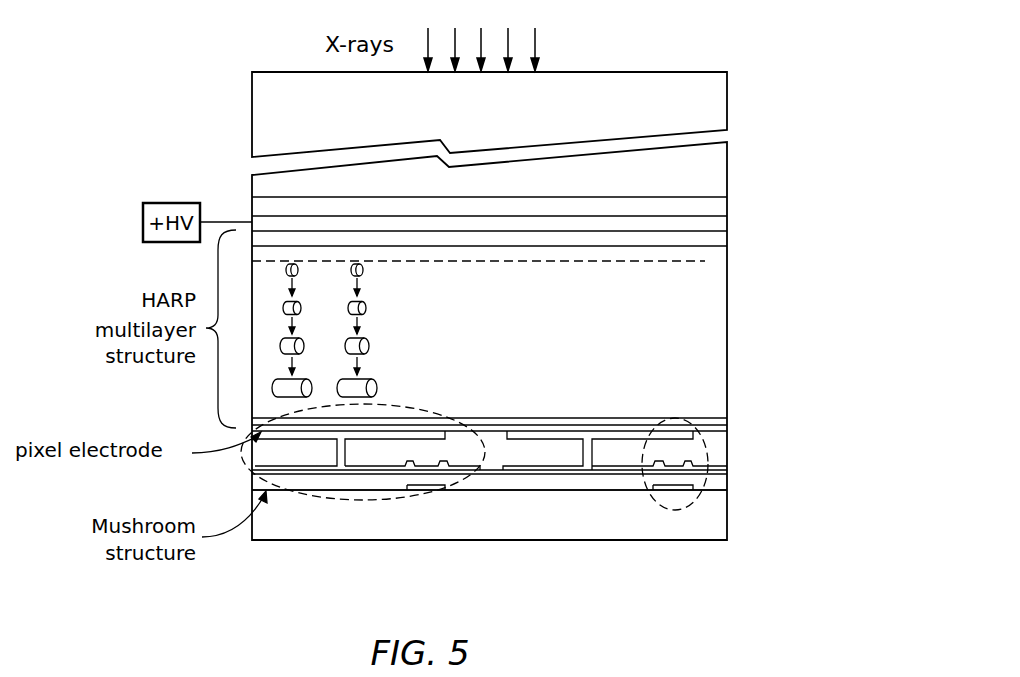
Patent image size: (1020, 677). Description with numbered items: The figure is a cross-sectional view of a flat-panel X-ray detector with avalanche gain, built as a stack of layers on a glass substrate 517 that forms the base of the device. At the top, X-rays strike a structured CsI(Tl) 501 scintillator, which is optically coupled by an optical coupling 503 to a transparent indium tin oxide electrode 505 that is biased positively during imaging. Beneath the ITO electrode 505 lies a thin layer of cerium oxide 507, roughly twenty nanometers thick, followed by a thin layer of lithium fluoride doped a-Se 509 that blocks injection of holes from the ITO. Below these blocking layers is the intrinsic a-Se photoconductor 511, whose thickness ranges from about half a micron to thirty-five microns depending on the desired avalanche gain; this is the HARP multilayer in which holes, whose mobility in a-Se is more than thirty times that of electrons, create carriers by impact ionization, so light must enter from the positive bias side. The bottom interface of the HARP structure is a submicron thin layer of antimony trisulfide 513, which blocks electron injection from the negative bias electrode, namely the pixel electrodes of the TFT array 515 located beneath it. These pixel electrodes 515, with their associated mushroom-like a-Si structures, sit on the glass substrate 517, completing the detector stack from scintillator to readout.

The structured CsI(Tl) 501 is at (727, 93).
The optical coupling 503 is at (727, 206).
The transparent indium tin oxide (ITO) electrode 505 is at (727, 227).
The thin layer of cerium oxide 507 is at (727, 240).
The thin layer of lithium fluoride doped a-Se 509 is at (705, 261).
The intrinsic a-Se photoconductor 511 is at (727, 362).
The thin layer of antimony trisulfide 513 is at (727, 425).
The pixel electrodes of the TFT array 515 is at (672, 497).
The glass substrate 517 is at (465, 532).